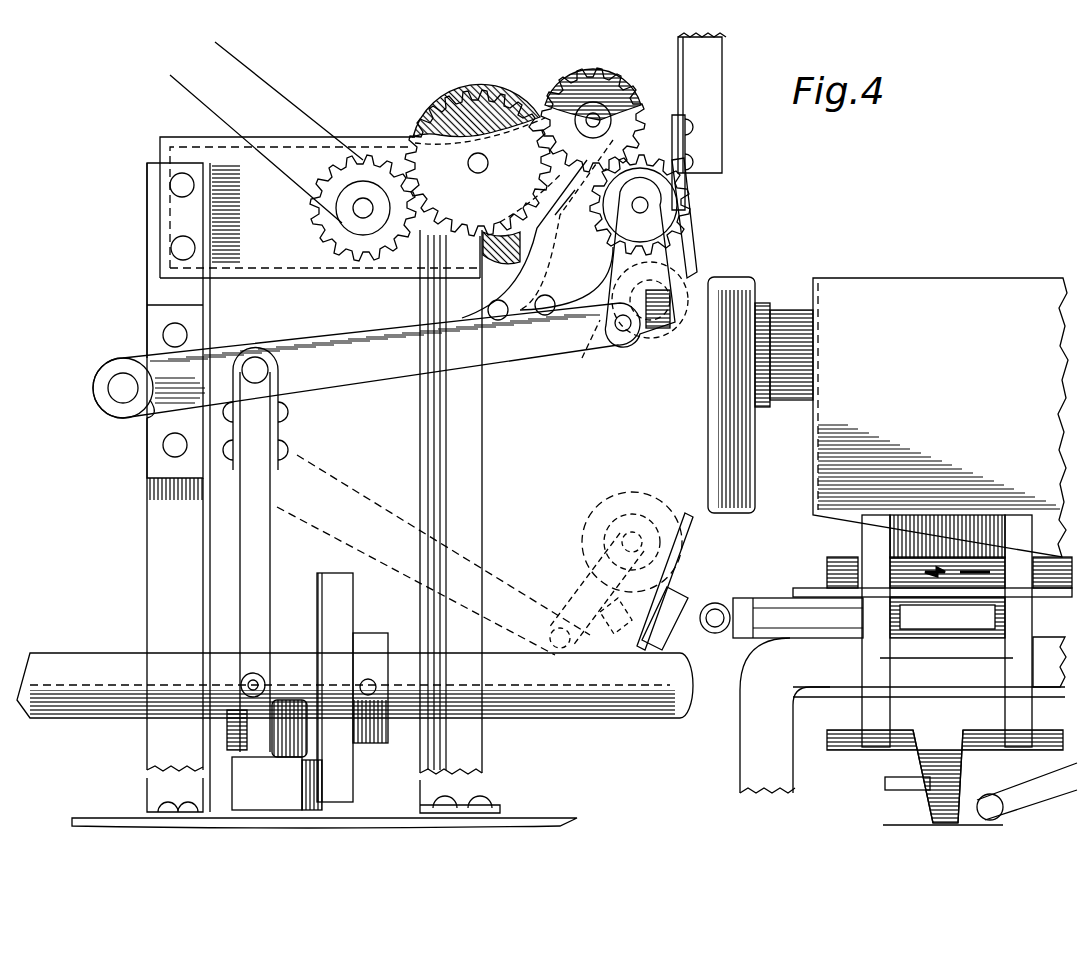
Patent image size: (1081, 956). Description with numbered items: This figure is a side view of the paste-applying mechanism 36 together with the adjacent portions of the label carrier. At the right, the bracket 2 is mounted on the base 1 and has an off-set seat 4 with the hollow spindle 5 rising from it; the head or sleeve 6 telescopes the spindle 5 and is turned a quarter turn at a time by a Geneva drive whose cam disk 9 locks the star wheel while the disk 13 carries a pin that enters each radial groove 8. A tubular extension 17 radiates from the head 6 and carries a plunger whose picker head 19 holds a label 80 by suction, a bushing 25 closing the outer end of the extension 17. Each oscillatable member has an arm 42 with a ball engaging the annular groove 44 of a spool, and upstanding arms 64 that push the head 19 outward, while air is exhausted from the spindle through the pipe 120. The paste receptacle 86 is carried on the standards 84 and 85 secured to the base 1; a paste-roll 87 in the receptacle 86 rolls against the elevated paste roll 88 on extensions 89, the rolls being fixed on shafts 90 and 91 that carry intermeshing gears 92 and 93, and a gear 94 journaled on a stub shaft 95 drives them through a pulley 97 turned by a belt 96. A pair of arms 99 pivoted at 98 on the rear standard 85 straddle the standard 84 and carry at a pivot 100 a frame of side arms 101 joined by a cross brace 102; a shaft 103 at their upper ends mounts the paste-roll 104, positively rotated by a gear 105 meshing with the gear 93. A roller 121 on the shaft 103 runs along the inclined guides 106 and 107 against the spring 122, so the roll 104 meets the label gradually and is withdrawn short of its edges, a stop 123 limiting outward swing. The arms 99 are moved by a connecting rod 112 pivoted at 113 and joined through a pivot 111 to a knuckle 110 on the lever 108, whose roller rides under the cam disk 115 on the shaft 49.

The base 1 is at (538, 816).
The bracket 2 is at (745, 762).
The off-set seat 4 is at (1055, 655).
The hollow spindle 5 is at (947, 617).
The sleeve 6 is at (947, 536).
The radial groove 8 is at (1042, 565).
The cam disk 9 is at (838, 562).
The disk 13 is at (812, 580).
The tubular extension 17 is at (788, 312).
The picker head 19 is at (742, 280).
The bushing 25 is at (762, 408).
The paste-applying mechanism 36 is at (530, 224).
The arm 42 is at (925, 790).
The annular groove 44 is at (890, 812).
The shaft 49 is at (78, 715).
The upstanding arms 64 is at (947, 631).
The label 80 is at (905, 282).
The frame or standard 84 is at (470, 426).
The rear standard 85 is at (150, 545).
The paste receptacle 86 is at (170, 150).
The paste-roll 87 is at (447, 108).
The paste roll 88 is at (578, 85).
The extensions 89 is at (566, 210).
The shaft 90 is at (478, 173).
The shaft 91 is at (600, 112).
The gear 92 is at (428, 155).
The gear 93 is at (645, 125).
The gear 94 is at (360, 165).
The stub shaft 95 is at (355, 215).
The belt 96 is at (255, 70).
The pulley 97 is at (345, 190).
The pivot 98 is at (120, 385).
The arms 99 is at (325, 385).
The pivot 100 is at (621, 332).
The side arms 101 is at (660, 200).
The cross brace 102 is at (580, 360).
The shaft 103 is at (690, 188).
The paste-roll 104 is at (635, 172).
The gear 105 is at (548, 270).
The track or guide member 106 is at (700, 245).
The guide 107 is at (680, 540).
The lever 108 is at (330, 778).
The knuckle 110 is at (245, 730).
The pivot 111 is at (240, 680).
The connecting rod 112 is at (250, 545).
The pivot 113 is at (256, 357).
The cam disk 115 is at (340, 598).
The pipe 120 is at (778, 612).
The roller 121 is at (705, 205).
The spring 122 is at (578, 296).
The stop 123 is at (680, 330).